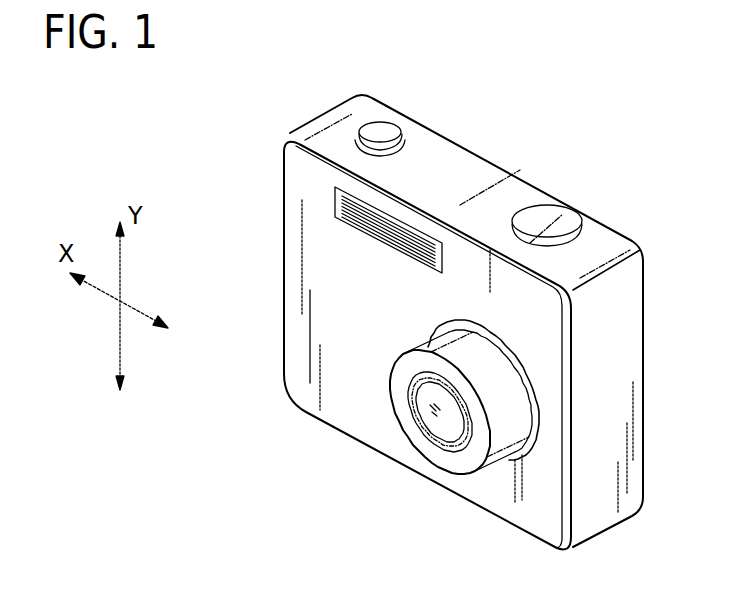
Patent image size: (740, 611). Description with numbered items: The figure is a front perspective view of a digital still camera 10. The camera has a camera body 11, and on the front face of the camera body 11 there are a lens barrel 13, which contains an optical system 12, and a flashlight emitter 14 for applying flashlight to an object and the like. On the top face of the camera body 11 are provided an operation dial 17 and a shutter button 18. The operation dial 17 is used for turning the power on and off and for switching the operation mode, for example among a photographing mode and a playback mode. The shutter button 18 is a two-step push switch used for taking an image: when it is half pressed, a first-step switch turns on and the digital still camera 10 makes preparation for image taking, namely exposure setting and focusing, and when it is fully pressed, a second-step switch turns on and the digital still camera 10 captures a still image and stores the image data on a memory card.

The digital still camera 10 is at (504, 143).
The camera body 11 is at (292, 352).
The optical system 12 is at (441, 430).
The lens barrel 13 is at (508, 452).
The flashlight emitter 14 is at (367, 228).
The operation dial 17 is at (548, 210).
The shutter button 18 is at (380, 124).